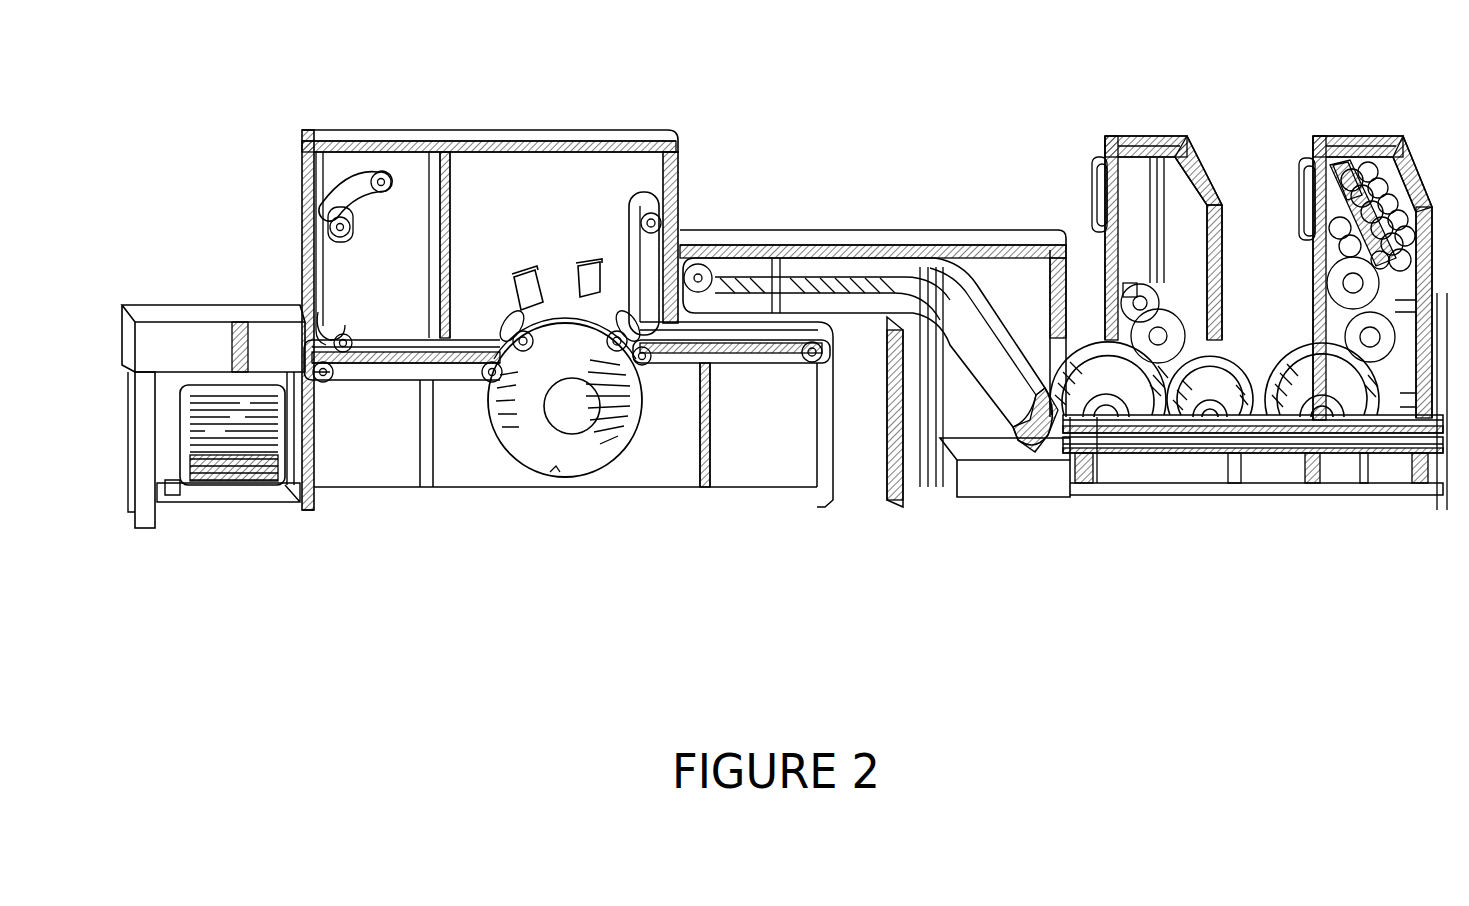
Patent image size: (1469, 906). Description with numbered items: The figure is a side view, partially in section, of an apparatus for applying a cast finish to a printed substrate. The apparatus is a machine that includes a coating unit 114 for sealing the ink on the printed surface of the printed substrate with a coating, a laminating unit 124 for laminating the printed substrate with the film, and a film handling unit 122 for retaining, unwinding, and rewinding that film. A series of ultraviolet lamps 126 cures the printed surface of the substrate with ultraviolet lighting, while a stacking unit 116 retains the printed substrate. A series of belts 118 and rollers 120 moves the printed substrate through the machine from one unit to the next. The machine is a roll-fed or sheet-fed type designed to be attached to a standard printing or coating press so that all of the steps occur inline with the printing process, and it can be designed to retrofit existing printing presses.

The coating unit 114 is at (1217, 178).
The stacking unit 116 is at (232, 497).
The belts 118 is at (830, 247).
The rollers 120 is at (570, 357).
The film handling unit 122 is at (343, 182).
The laminating unit 124 is at (453, 129).
The ultraviolet lamps 126 is at (528, 271).